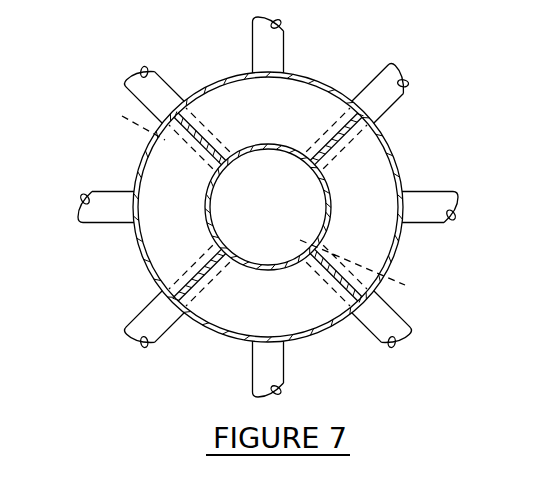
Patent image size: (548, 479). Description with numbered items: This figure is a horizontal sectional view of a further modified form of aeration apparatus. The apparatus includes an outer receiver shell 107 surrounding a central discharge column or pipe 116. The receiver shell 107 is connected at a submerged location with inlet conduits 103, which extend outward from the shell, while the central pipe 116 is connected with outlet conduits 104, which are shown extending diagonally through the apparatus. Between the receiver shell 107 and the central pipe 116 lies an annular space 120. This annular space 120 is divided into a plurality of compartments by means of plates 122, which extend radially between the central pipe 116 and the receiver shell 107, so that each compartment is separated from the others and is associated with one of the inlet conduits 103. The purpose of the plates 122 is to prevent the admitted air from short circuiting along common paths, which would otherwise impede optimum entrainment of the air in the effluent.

The inlet conduit 103 is at (281, 44).
The outlet conduit 104 is at (134, 102).
The receiver shell 107 is at (392, 150).
The central discharge column or pipe 116 is at (275, 137).
The annular space 120 is at (230, 103).
The plate 122 is at (327, 140).